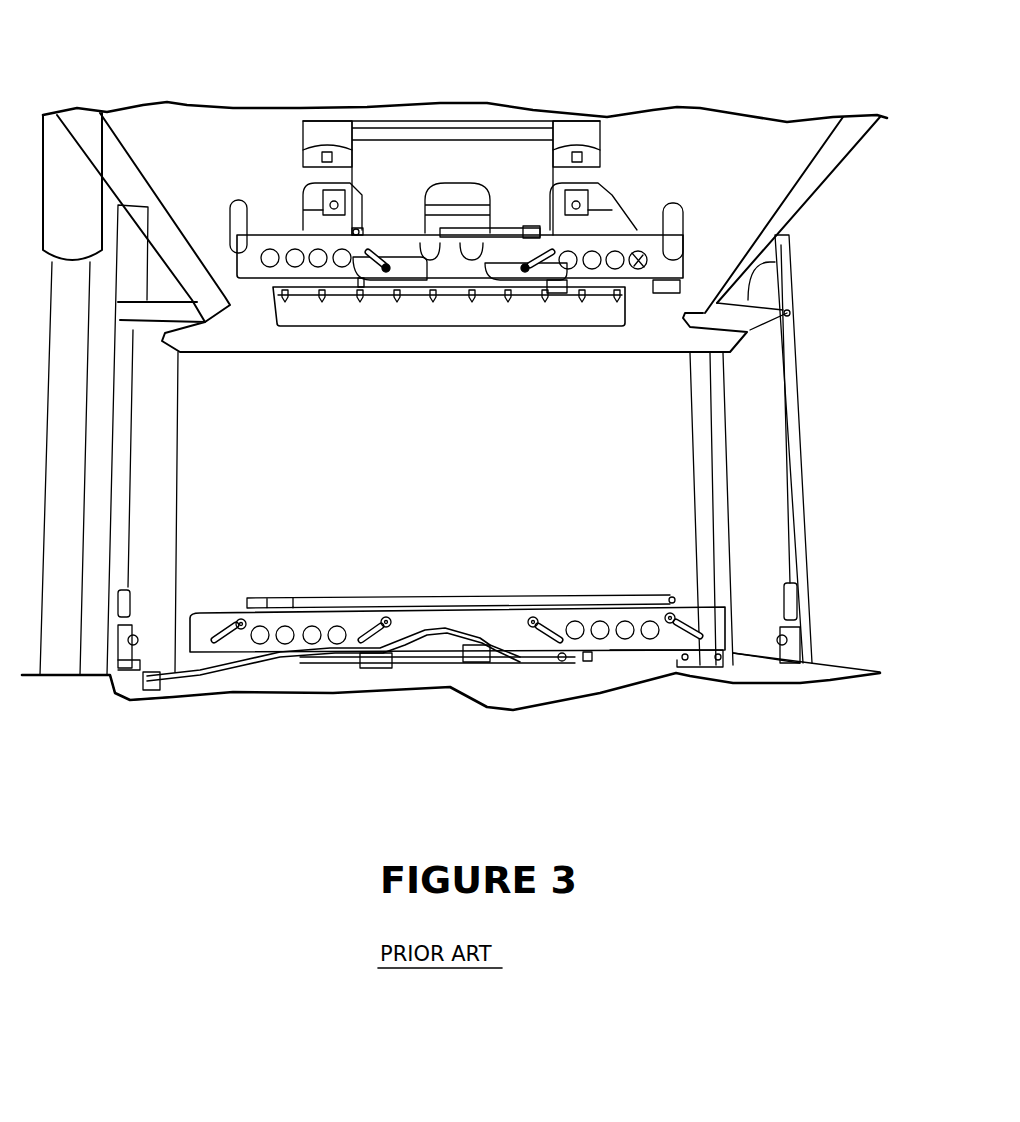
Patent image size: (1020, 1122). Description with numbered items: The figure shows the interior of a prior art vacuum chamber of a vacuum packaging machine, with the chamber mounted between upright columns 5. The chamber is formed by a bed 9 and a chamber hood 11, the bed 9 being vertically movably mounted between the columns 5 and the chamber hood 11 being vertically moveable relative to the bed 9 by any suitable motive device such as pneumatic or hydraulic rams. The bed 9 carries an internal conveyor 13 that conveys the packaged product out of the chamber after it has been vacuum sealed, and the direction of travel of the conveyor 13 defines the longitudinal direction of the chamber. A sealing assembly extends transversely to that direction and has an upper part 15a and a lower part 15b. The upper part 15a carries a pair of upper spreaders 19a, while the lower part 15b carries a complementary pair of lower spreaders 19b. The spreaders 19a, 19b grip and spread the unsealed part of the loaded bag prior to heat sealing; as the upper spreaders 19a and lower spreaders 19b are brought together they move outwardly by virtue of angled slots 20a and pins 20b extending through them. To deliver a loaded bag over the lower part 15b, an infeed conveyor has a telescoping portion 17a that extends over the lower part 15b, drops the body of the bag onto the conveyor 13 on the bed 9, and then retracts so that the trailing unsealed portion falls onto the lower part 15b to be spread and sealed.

The column 5 is at (757, 622).
The bed 9 is at (162, 703).
The chamber hood 11 is at (478, 172).
The conveyor 13 is at (288, 680).
The upper part of sealing assembly 15a is at (625, 255).
The lower part of sealing assembly 15b is at (587, 661).
The telescoping portion 17a is at (437, 600).
The upper spreader 19a is at (300, 247).
The lower spreader 19b is at (240, 642).
The angled slot 20a is at (353, 247).
The pin 20b is at (389, 263).